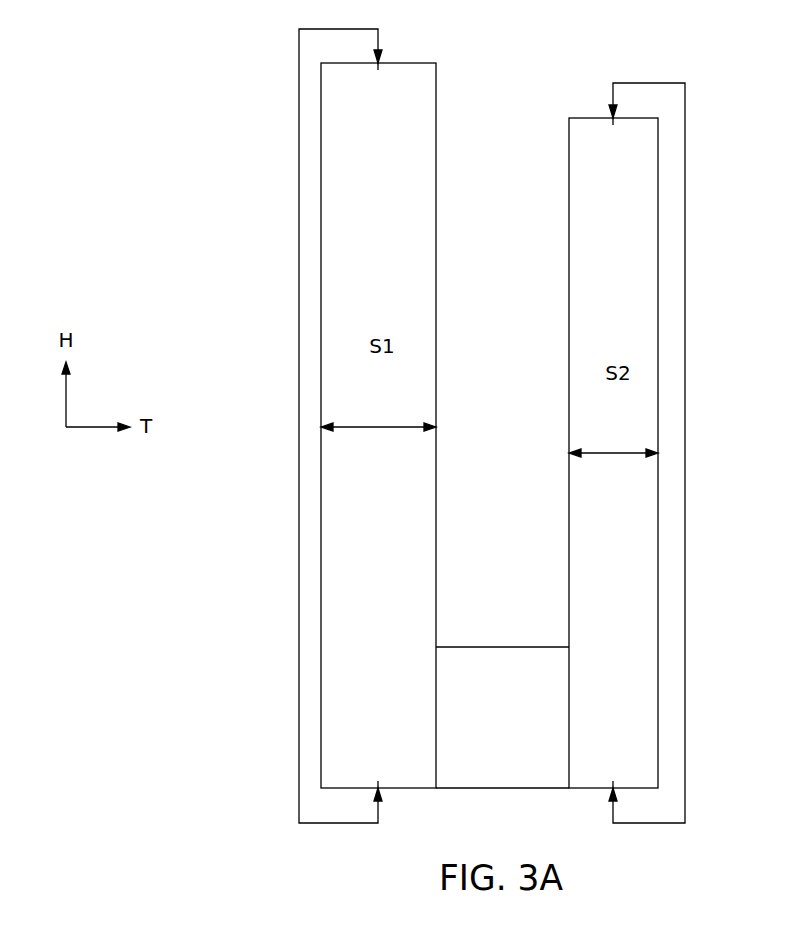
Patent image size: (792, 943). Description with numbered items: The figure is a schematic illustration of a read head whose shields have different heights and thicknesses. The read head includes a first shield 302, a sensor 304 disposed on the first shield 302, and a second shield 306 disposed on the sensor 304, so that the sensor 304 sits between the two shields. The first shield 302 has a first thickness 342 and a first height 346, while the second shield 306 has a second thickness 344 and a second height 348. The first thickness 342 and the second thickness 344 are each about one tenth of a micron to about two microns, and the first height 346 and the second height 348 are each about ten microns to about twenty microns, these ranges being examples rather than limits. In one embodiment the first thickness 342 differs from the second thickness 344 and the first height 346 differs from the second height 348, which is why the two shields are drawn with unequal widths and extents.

The first shield (S1) 302 is at (362, 475).
The sensor 304 is at (483, 756).
The second shield (S2) 306 is at (598, 503).
The first thickness 342 is at (379, 427).
The second thickness 344 is at (614, 452).
The first height 346 is at (299, 428).
The second height 348 is at (685, 453).